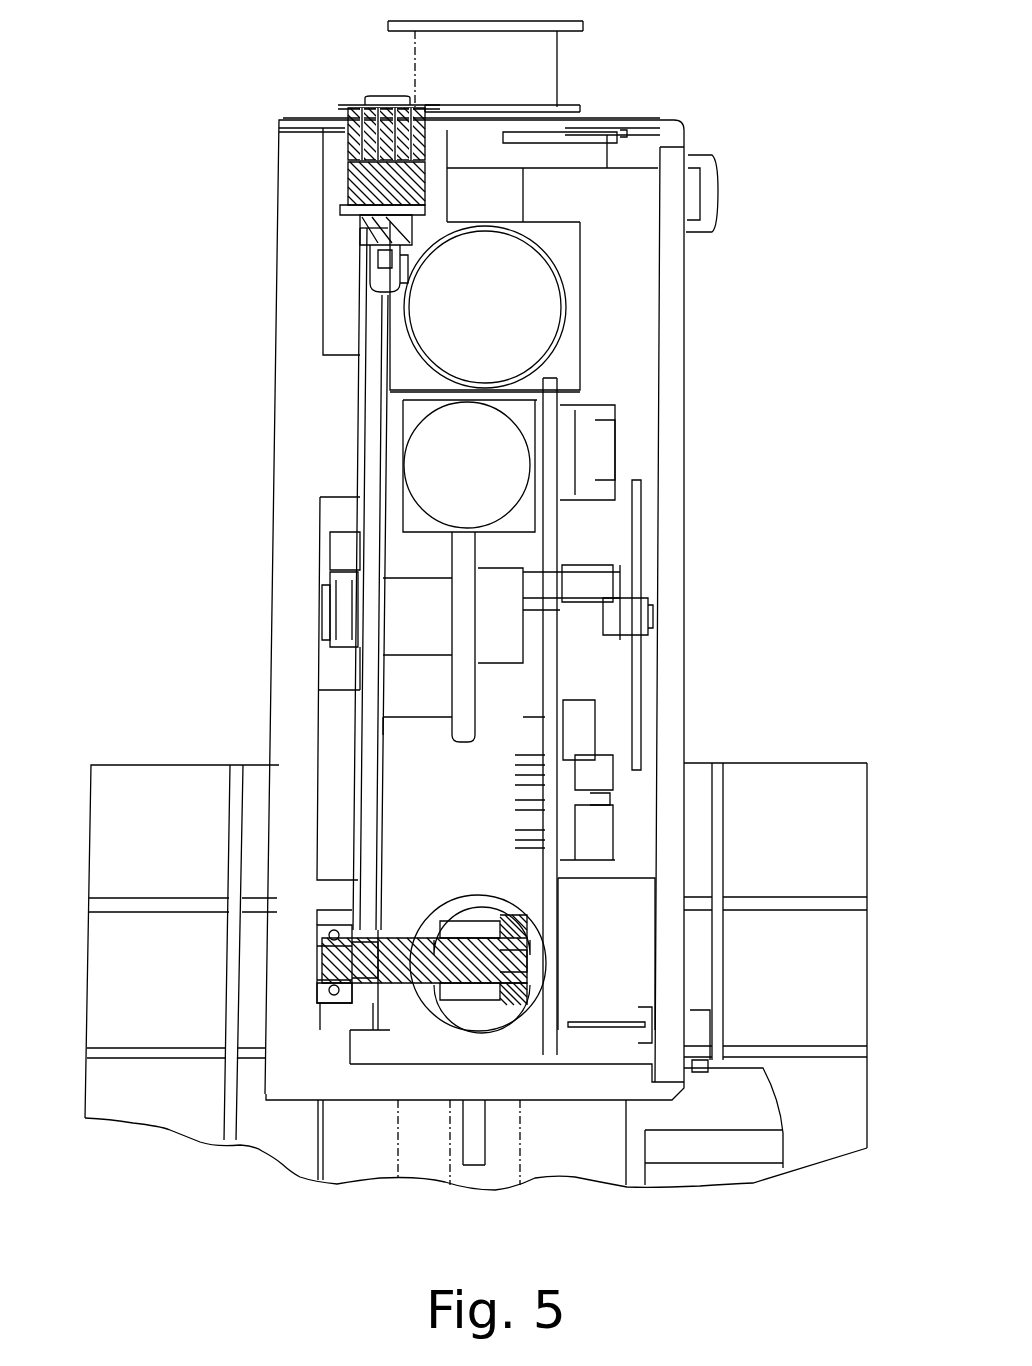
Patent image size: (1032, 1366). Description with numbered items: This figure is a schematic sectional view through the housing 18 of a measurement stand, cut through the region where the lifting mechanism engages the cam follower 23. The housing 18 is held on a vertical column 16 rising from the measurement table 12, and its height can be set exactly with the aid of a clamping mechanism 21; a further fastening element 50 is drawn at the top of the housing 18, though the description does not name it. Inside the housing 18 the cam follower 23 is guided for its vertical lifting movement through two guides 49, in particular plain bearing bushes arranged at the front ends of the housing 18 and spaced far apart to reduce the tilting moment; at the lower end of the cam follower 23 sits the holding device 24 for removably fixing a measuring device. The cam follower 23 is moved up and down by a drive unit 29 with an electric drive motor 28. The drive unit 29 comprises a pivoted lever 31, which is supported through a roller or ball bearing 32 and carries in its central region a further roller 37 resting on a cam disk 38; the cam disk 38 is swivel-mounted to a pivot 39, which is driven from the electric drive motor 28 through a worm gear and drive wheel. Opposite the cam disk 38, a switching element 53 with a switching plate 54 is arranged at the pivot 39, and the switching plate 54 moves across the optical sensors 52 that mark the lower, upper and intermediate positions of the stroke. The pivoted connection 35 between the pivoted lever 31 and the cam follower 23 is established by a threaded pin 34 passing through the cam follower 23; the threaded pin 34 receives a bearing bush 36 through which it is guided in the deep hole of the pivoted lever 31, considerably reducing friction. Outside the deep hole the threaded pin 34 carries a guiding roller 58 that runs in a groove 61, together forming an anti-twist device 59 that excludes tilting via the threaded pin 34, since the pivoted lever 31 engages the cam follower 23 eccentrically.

The measurement table 12 is at (172, 758).
The vertical column 16 is at (501, 319).
The housing 18 is at (694, 126).
The clamping mechanism 21 is at (572, 67).
The cam follower 23 is at (480, 995).
The holding device 24 is at (310, 1153).
The electric drive motor 28 is at (485, 476).
The drive unit 29 is at (338, 478).
The pivoted lever 31 is at (360, 387).
The roller or ball bearing 32 is at (362, 271).
The threaded pin 34 is at (434, 990).
The pivoted connection 35 is at (395, 1008).
The bearing bush 36 is at (378, 1000).
The roller 37 is at (345, 586).
The cam disk 38 is at (342, 538).
The pivot 39 is at (413, 630).
The guides 49 is at (518, 1010).
The bolt 50 is at (378, 88).
The optical sensors 52 is at (611, 872).
The switching element 53 is at (634, 529).
The switching plate 54 is at (628, 782).
The guiding roller 58 is at (332, 1004).
The anti-twist device 59 is at (317, 915).
The groove 61 is at (338, 940).